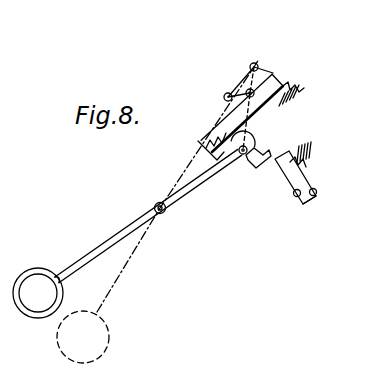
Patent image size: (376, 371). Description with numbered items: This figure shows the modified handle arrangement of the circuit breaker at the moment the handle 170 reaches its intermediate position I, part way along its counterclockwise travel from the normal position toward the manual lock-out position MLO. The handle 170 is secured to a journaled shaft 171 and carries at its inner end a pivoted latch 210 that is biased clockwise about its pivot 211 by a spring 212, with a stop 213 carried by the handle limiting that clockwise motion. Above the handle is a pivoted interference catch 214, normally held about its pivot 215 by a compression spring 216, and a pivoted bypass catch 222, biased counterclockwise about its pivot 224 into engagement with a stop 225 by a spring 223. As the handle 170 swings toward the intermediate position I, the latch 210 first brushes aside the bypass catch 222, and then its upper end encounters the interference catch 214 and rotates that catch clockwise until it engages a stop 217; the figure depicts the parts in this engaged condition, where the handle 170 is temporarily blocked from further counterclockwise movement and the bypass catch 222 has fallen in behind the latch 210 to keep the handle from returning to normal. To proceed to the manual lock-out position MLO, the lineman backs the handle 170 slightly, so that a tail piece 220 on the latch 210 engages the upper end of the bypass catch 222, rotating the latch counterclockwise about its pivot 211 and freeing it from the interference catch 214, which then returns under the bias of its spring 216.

The intermediate position I is at (20, 277).
The manual lock-out position MLO is at (109, 338).
The manually-operable handle 170 is at (100, 250).
The shaft 171 is at (154, 207).
The pivoted latch 210 is at (254, 168).
The pivot 211 is at (241, 155).
The spring 212 is at (219, 137).
The stop 213 is at (250, 97).
The pivoted interference catch 214 is at (268, 66).
The pivot 215 is at (250, 68).
The compression spring 216 is at (289, 89).
The stop 217 is at (224, 97).
The tail piece 220 is at (274, 157).
The pivoted bypass catch 222 is at (305, 205).
The spring 223 is at (306, 167).
The pivot 224 is at (294, 195).
The stop 225 is at (317, 193).